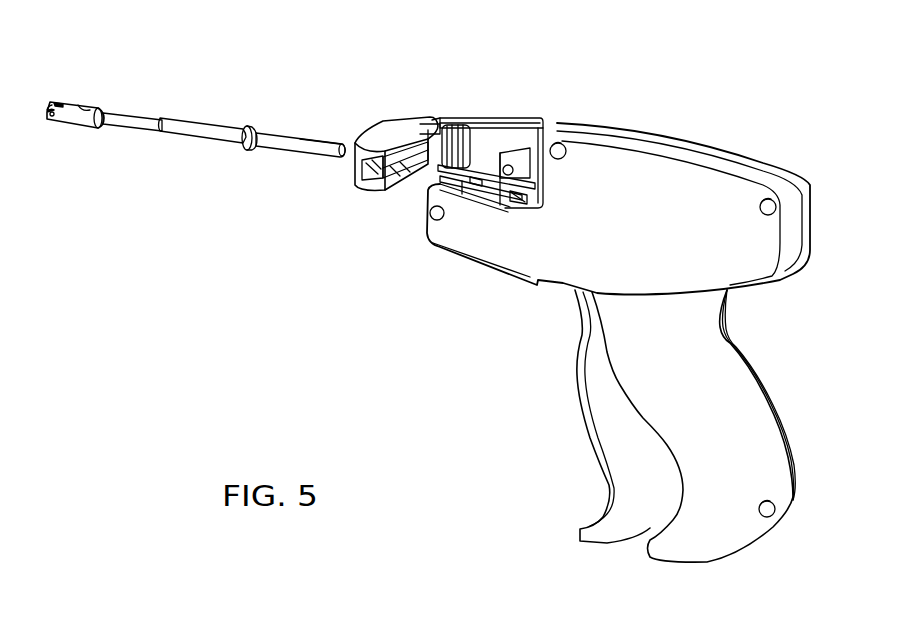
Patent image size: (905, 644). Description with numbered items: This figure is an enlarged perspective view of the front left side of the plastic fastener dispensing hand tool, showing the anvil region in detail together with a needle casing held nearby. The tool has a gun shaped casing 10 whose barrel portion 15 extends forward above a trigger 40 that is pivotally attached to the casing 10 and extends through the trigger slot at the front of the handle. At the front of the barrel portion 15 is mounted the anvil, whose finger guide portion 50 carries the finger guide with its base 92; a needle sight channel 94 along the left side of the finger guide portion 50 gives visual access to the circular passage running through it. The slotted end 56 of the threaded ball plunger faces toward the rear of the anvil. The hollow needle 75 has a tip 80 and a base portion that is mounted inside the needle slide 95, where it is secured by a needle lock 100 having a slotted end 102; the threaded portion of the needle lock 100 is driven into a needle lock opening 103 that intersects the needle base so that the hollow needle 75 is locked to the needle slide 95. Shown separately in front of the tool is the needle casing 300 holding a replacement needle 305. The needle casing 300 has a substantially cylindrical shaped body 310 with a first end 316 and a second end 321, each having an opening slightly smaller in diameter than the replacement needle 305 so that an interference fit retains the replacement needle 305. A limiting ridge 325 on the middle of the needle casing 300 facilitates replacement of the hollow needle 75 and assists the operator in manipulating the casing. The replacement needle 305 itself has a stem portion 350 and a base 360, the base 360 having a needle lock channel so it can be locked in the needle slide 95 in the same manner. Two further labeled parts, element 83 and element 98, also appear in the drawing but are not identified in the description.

The casing 10 is at (768, 178).
The barrel portion 15 is at (672, 104).
The trigger 40 is at (600, 487).
The finger guide portion 50 is at (412, 108).
The slotted end 56 is at (446, 127).
The hollow needle 75 is at (480, 152).
The tip 80 is at (452, 207).
The support rail 83 is at (476, 212).
The base 92 is at (440, 168).
The needle sight channel 94 is at (366, 127).
The needle slide 95 is at (534, 170).
The cap blade 98 is at (398, 176).
The needle lock 100 is at (527, 148).
The slotted end 102 is at (508, 192).
The needle lock opening 103 is at (508, 135).
The needle casing 300 is at (229, 100).
The replacement needle 305 is at (95, 82).
The cylindrical shaped body 310 is at (292, 132).
The first end 316 is at (180, 133).
The second end 321 is at (306, 156).
The limiting ridge 325 is at (251, 150).
The stem portion 350 is at (136, 120).
The base 360 is at (80, 128).